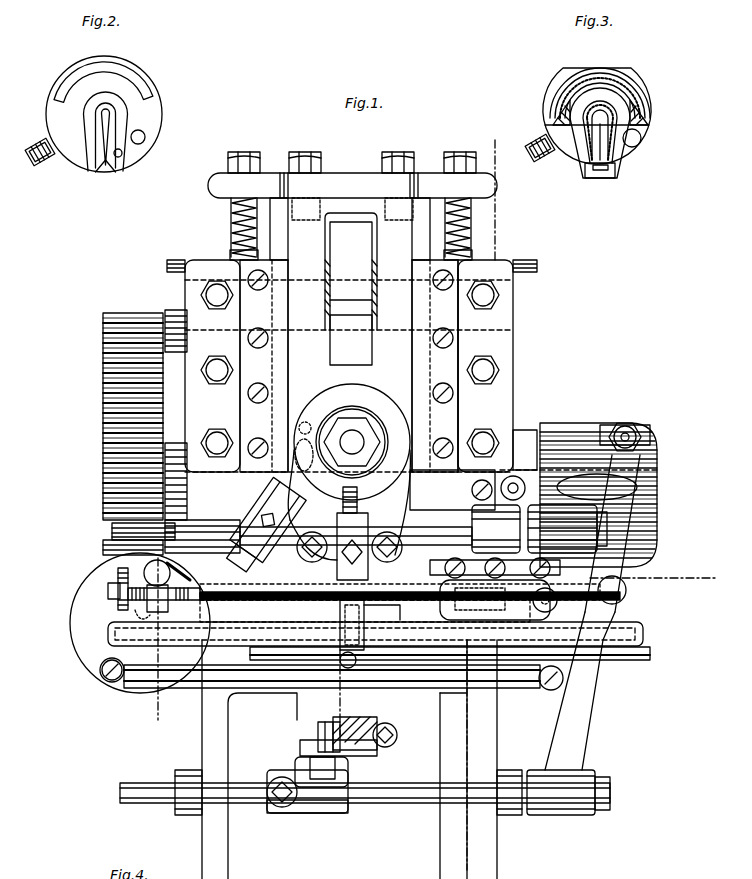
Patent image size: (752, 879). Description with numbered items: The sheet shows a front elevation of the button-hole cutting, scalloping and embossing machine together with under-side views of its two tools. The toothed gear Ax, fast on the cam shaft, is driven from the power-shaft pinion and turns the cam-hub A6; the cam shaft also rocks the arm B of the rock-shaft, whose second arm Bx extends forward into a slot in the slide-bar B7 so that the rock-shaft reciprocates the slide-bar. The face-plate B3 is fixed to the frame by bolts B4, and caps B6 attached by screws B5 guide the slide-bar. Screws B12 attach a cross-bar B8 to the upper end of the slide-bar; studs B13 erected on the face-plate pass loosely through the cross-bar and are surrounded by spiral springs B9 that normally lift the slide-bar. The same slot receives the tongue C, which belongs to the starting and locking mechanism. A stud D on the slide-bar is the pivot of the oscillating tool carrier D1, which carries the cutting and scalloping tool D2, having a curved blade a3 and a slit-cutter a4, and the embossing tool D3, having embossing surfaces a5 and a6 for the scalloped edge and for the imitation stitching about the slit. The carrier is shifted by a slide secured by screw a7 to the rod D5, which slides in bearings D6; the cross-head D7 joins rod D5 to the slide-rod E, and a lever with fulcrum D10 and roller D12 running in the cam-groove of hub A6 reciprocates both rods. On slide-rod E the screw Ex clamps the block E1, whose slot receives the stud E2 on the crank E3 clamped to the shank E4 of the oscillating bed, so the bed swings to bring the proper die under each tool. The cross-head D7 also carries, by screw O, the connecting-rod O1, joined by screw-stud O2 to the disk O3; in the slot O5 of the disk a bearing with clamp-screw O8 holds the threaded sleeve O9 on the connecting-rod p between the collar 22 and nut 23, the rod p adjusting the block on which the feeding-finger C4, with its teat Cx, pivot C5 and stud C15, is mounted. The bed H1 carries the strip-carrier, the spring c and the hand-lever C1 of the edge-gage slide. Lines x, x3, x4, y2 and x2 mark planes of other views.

In FIG. 2, the button-hole cutting and scalloping tool D2 is at (162, 113).
In FIG. 1, the button-hole cutting and scalloping tool D2 is at (248, 560).
In FIG. 2, the curved blade a3 is at (140, 83).
In FIG. 2, the slit-cutter a4 is at (101, 147).
In FIG. 3, the button-hole and edge-embossing tool D3 is at (648, 93).
In FIG. 3, the embossing-surface a5 is at (638, 72).
In FIG. 3, the embossing-surface a6 is at (608, 157).
In FIG. 1, the cross-bar B8 is at (352, 196).
In FIG. 1, the screws B12 is at (305, 152).
In FIG. 1, the arm B is at (352, 154).
In FIG. 1, the section line x is at (480, 498).
In FIG. 1, the spiral springs B9 is at (232, 220).
In FIG. 1, the studs B13 is at (232, 252).
In FIG. 1, the slide-bar B7 is at (290, 258).
In FIG. 1, the second arm Bx is at (351, 271).
In FIG. 1, the tongue C is at (351, 332).
In FIG. 1, the bolts B4 is at (205, 375).
In FIG. 1, the screws B5 is at (470, 342).
In FIG. 1, the caps B6 is at (341, 366).
In FIG. 1, the face-plate B3 is at (472, 366).
In FIG. 1, the oscillating tool carrier D1 is at (378, 395).
In FIG. 1, the stud D is at (352, 442).
In FIG. 1, the section line x2 is at (296, 455).
In FIG. 1, the toothed gear Ax is at (118, 434).
In FIG. 1, the slide-rod D5 is at (118, 532).
In FIG. 1, the bearings D6 is at (386, 529).
In FIG. 1, the cam-hub A6 is at (592, 495).
In FIG. 1, the roller or stud D12 is at (632, 423).
In FIG. 1, the fulcrum D10 is at (618, 596).
In FIG. 1, the dotted line x4 is at (660, 578).
In FIG. 1, the cross-head D7 is at (548, 738).
In FIG. 1, the screw a7 is at (290, 562).
In FIG. 1, the stud C15 is at (410, 535).
In FIG. 1, the pivot C5 is at (498, 588).
In FIG. 1, the bed H1 is at (108, 634).
In FIG. 1, the disk O3 is at (68, 624).
In FIG. 1, the threaded sleeve O9 is at (126, 580).
In FIG. 1, the nut 23 is at (108, 593).
In FIG. 1, the clamp-screw O8 is at (169, 582).
In FIG. 1, the slot O5 is at (135, 612).
In FIG. 1, the collar 22 is at (199, 613).
In FIG. 1, the section line y2 is at (156, 639).
In FIG. 1, the screw-stud O2 is at (102, 677).
In FIG. 1, the screw O is at (387, 668).
In FIG. 1, the connecting-rod O1 is at (360, 759).
In FIG. 1, the connecting-rod p is at (365, 611).
In FIG. 1, the hand-lever C1 is at (257, 613).
In FIG. 1, the section line x3 is at (288, 610).
In FIG. 1, the teat Cx is at (342, 640).
In FIG. 1, the feeding-finger C4 is at (395, 612).
In FIG. 1, the spiral spring c is at (346, 692).
In FIG. 1, the shank E4 is at (378, 720).
In FIG. 1, the roller or stud E2 is at (300, 760).
In FIG. 1, the crank or arm E3 is at (348, 765).
In FIG. 1, the screw Ex is at (282, 807).
In FIG. 1, the block E1 is at (330, 813).
In FIG. 1, the slide-rod E is at (390, 810).